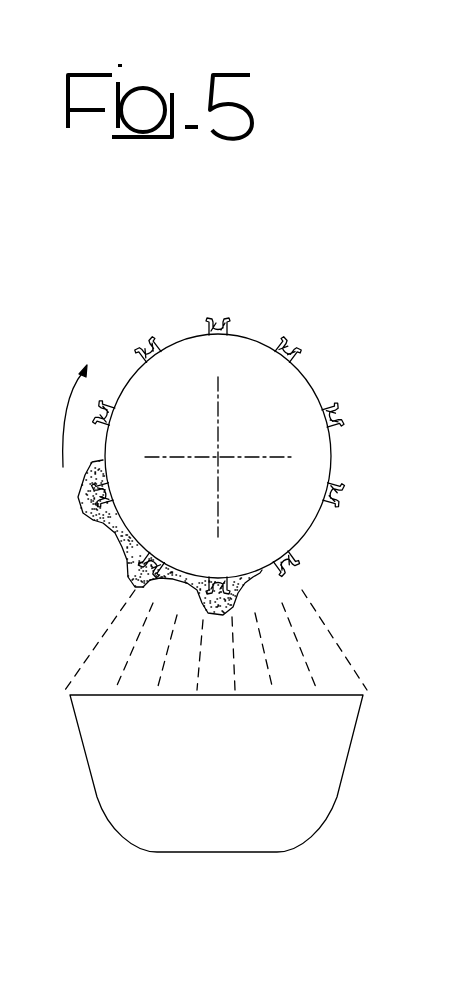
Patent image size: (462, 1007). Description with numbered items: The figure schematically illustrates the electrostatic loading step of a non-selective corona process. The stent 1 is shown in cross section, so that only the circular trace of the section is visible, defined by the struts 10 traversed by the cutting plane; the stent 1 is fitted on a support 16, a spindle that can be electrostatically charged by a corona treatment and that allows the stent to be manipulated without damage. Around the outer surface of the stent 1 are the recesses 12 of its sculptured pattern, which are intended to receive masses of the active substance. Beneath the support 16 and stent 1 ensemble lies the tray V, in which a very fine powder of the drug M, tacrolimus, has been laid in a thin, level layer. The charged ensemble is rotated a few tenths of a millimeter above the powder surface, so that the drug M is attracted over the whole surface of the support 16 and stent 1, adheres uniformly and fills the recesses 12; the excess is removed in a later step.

The stent 1 is at (220, 419).
The support or spindle 16 is at (195, 358).
The struts 10 is at (112, 421).
The recesses 12 is at (348, 407).
The drug M is at (97, 523).
The tray V is at (333, 750).